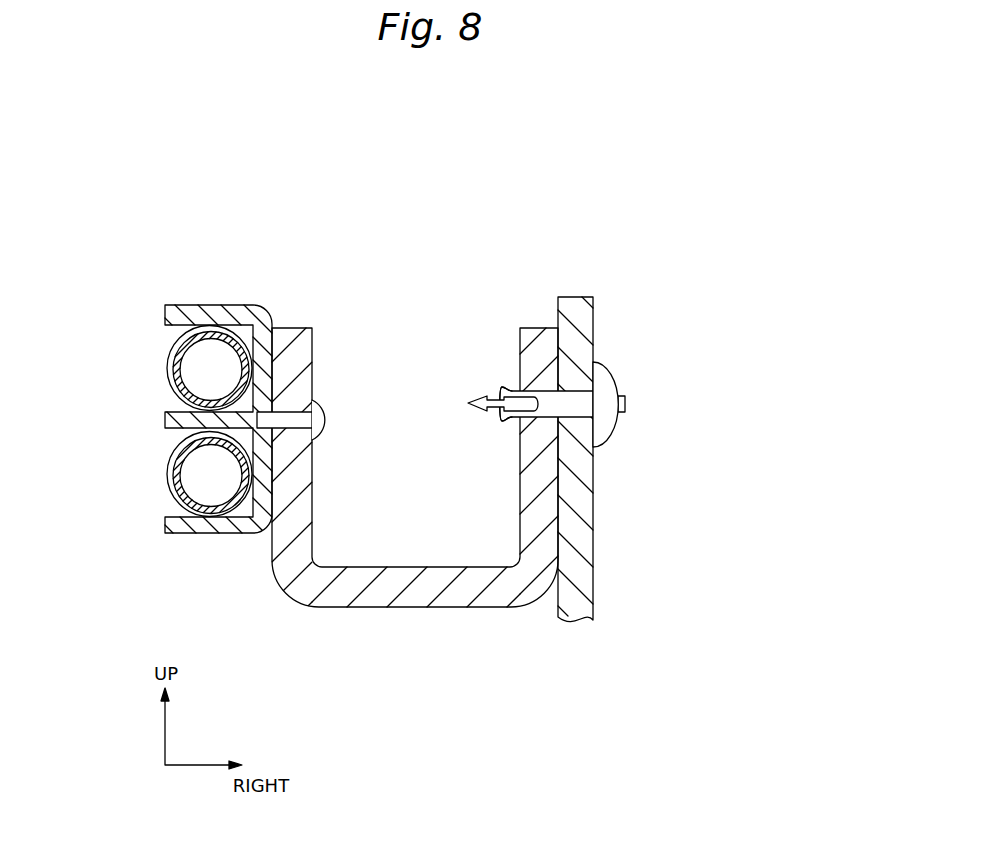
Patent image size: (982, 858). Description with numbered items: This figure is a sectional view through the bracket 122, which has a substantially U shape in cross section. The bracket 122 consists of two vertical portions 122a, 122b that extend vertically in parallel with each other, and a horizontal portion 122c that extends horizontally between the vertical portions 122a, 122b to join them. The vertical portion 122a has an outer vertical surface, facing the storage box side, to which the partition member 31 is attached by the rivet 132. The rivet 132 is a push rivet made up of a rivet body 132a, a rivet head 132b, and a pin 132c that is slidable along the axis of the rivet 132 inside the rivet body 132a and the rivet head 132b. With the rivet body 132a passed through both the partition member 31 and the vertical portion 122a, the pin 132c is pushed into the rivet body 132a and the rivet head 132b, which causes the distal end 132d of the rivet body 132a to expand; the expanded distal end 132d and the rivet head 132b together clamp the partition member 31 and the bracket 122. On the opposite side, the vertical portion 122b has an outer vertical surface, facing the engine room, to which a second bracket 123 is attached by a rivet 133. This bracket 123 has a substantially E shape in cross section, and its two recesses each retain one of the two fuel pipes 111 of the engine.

The partition member 31 is at (593, 310).
The fuel pipes 111 is at (167, 362).
The bracket 122 is at (415, 390).
The vertical portion 122a is at (519, 410).
The vertical portion 122b is at (298, 335).
The horizontal portion 122c is at (423, 583).
The bracket 123 is at (219, 305).
The rivet 132 is at (633, 379).
The rivet body 132a is at (568, 403).
The rivet head 132b is at (602, 383).
The pin 132c is at (627, 403).
The distal end 132d is at (508, 387).
The rivet 133 is at (328, 410).